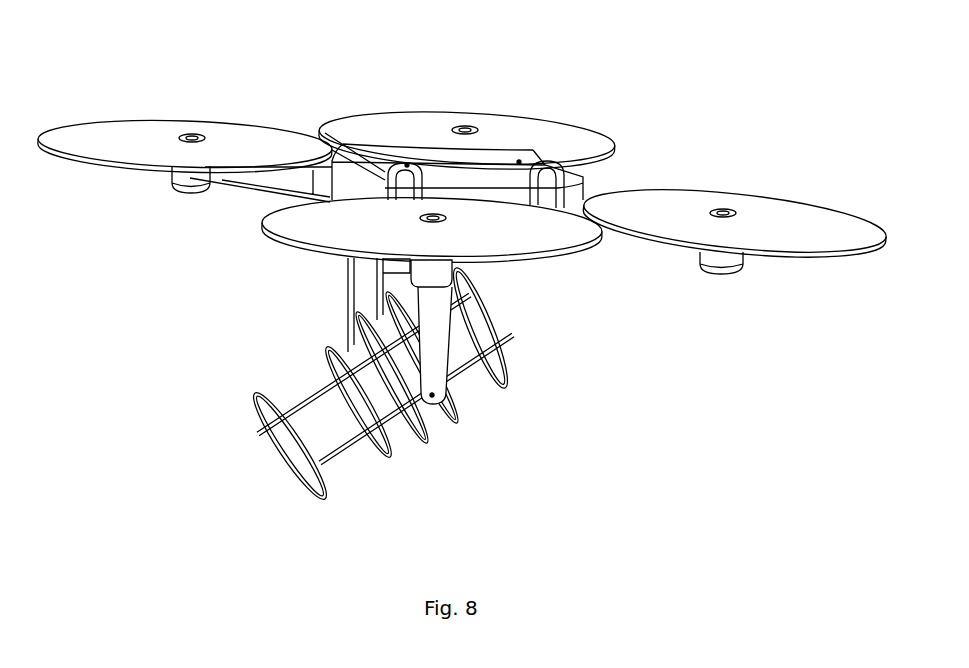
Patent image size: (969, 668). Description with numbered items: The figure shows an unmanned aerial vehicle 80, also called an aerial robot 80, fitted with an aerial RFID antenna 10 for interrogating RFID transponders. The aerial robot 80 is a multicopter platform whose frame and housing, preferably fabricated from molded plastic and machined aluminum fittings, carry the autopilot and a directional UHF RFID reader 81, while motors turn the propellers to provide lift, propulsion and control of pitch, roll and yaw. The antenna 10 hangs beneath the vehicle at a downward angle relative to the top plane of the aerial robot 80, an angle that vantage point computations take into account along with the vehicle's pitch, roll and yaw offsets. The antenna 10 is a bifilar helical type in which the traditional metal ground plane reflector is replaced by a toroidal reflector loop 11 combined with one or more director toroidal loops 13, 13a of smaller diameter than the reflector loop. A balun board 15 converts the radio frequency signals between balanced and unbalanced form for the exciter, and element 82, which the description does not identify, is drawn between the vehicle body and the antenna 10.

The unmanned aerial vehicle 80 is at (103, 114).
The directional UHF RFID reader 81 is at (583, 185).
The mounting bracket 82 is at (435, 363).
The balun board 15 is at (457, 427).
The toroidal reflector loop 11 is at (507, 324).
The director toroidal loop 13 is at (324, 359).
The director toroidal loop 13a is at (254, 410).
The antenna 10 is at (235, 468).